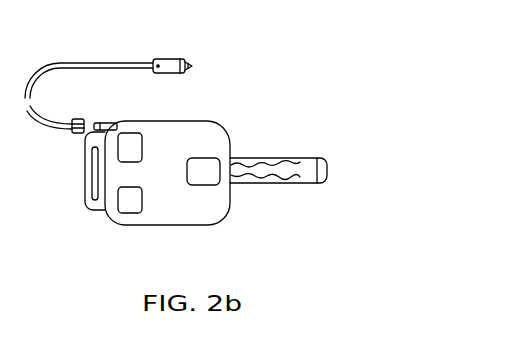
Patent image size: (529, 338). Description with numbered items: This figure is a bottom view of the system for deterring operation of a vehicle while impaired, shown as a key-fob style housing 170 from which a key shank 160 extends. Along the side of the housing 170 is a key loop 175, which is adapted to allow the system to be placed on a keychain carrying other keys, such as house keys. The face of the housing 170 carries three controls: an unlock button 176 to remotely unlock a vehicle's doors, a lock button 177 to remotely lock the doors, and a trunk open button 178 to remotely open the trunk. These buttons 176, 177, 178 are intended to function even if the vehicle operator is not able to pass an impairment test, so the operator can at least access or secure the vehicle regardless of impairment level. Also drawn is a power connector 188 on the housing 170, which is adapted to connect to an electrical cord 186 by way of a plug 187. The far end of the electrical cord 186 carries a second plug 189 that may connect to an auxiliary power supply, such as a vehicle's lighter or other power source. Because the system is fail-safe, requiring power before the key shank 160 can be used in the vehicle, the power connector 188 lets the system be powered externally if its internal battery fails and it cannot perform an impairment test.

The key blade 160 is at (263, 155).
The key fob housing 170 is at (228, 220).
The key loop 175 is at (95, 178).
The unlock button 176 is at (133, 145).
The lock button 177 is at (208, 166).
The trunk open button 178 is at (132, 198).
The electrical cord 186 is at (95, 64).
The plug 187 is at (78, 118).
The power connector 188 is at (105, 118).
The plug 189 is at (180, 63).